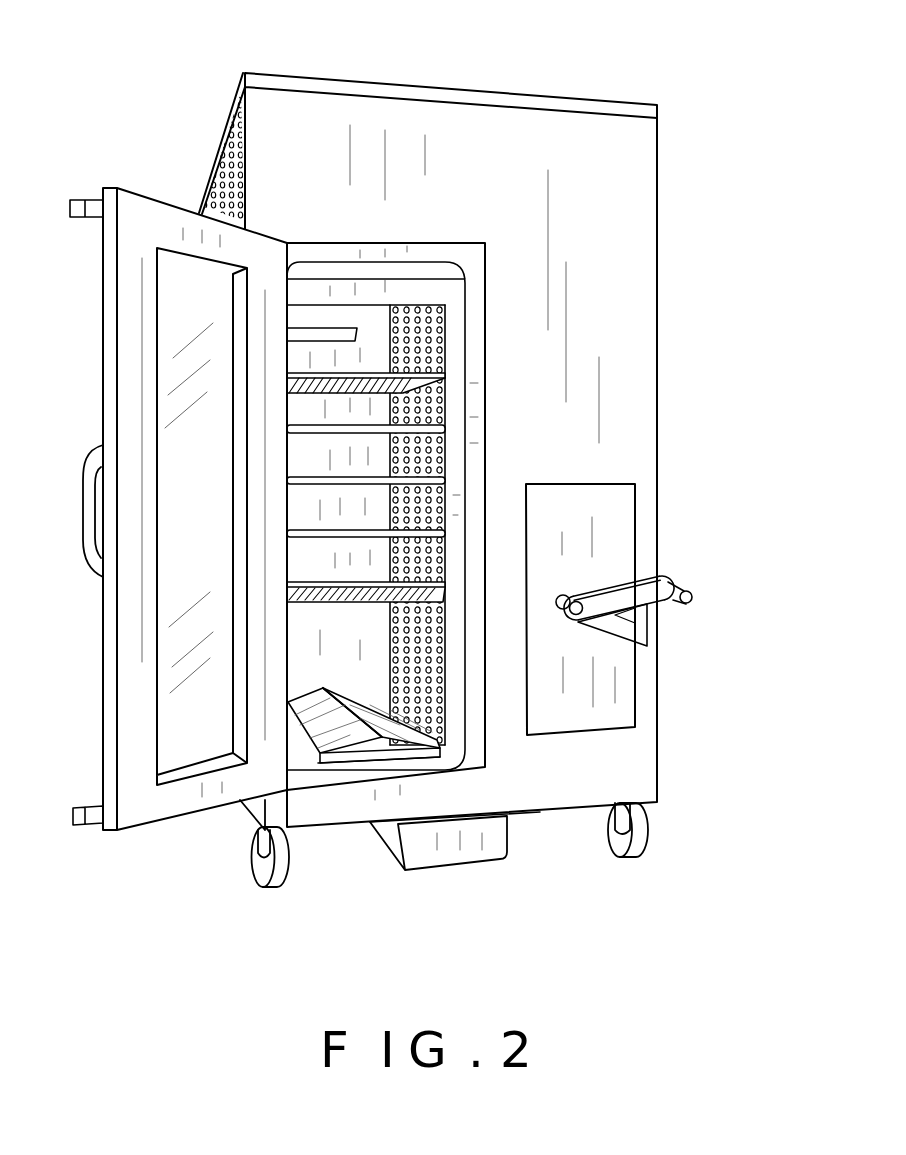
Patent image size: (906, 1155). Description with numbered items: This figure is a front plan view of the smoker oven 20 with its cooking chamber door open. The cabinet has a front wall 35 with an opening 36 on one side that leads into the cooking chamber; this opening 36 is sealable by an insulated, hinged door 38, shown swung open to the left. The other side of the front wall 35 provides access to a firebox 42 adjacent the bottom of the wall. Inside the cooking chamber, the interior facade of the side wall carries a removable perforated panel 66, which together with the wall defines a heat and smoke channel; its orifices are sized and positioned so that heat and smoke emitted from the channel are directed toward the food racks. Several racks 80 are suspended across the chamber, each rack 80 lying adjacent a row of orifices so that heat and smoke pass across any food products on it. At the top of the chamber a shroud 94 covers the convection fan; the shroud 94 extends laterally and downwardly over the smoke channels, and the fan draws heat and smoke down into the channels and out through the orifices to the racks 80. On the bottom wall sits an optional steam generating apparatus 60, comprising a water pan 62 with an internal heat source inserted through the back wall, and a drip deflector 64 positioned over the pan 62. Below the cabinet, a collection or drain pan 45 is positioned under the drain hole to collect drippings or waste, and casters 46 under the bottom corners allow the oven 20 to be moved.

The oven 20 is at (367, 82).
The opening 36 is at (327, 290).
The shroud 94 is at (413, 300).
The rack 80 is at (397, 357).
The front wall 35 is at (600, 357).
The perforated panel 66 is at (417, 500).
The firebox 42 is at (598, 532).
The door 38 is at (132, 648).
The drip deflector 64 is at (342, 722).
The steam generating apparatus 60 is at (323, 760).
The water pan 62 is at (380, 768).
The drain pan 45 is at (457, 862).
The caster 46 is at (638, 842).